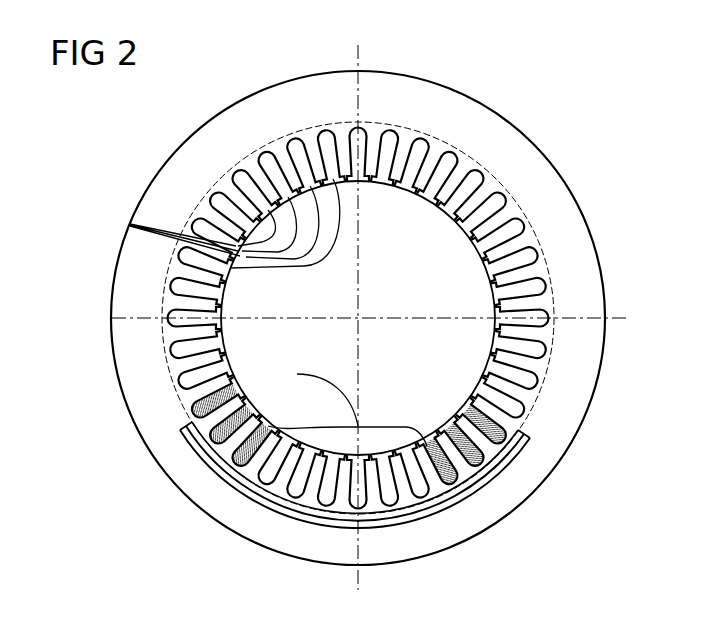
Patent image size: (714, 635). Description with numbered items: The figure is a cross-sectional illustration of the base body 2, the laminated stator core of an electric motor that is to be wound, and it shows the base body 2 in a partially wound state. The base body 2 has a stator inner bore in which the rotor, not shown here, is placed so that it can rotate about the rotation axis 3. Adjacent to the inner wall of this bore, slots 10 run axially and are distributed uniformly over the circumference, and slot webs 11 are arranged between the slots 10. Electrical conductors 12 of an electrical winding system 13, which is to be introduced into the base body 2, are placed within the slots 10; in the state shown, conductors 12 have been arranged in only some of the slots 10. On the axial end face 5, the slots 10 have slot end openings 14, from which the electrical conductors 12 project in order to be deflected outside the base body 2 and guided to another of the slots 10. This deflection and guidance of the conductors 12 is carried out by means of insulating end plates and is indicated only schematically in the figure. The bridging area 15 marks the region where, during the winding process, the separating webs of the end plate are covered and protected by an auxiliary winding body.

The base body 2 is at (604, 279).
The rotation axis 3 is at (358, 316).
The axial end face 5 is at (563, 219).
The slots 10 is at (130, 224).
The slot webs 11 is at (437, 143).
The electrical conductors 12 is at (210, 449).
The electrical winding system 13 is at (305, 524).
The slot end openings 14 is at (293, 139).
The bridging area 15 is at (297, 374).